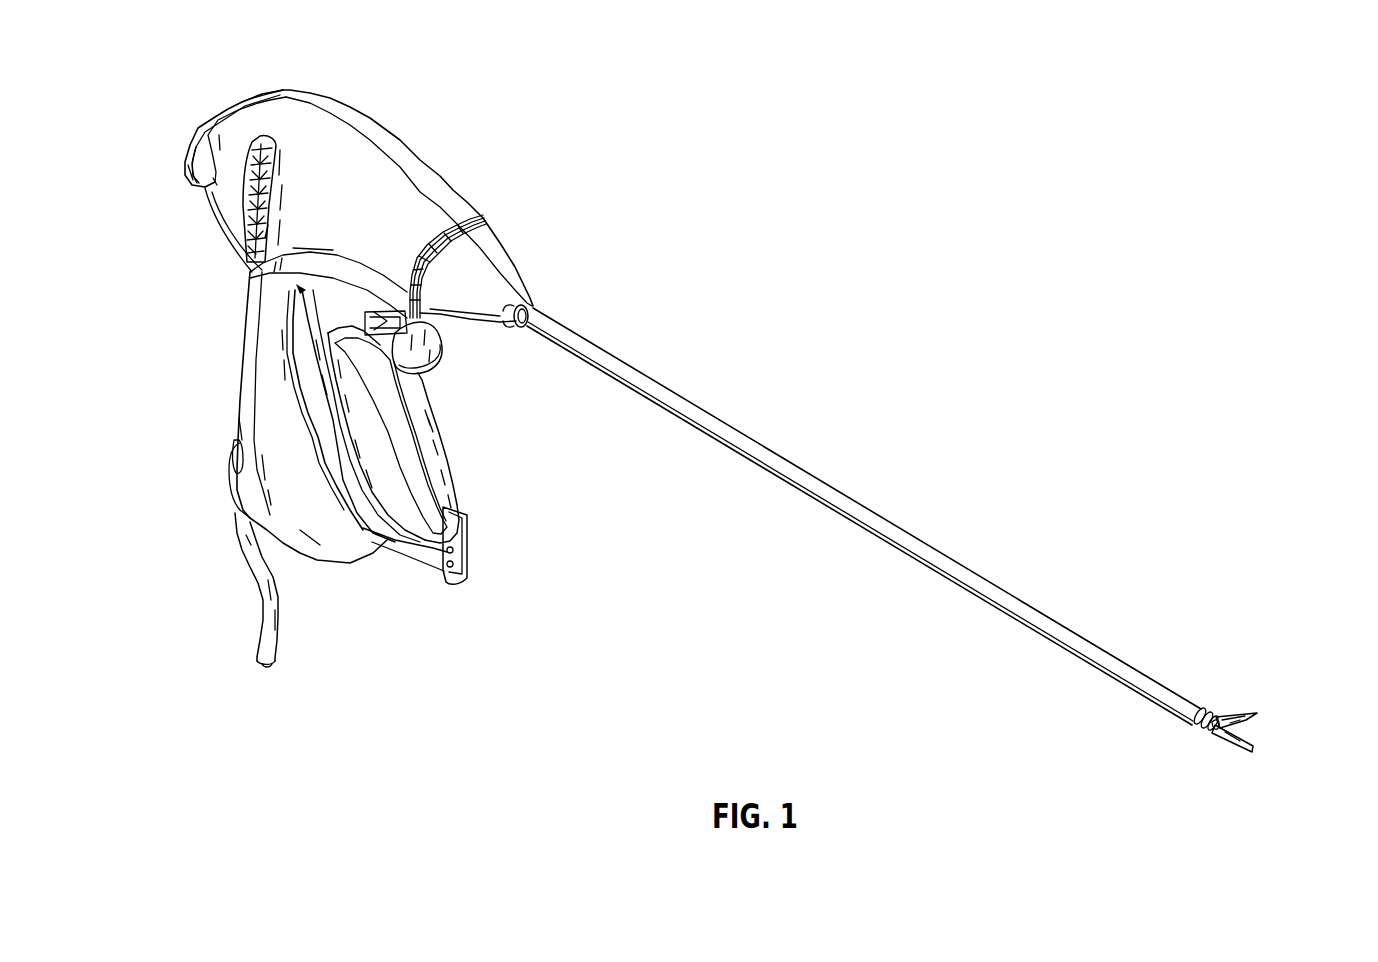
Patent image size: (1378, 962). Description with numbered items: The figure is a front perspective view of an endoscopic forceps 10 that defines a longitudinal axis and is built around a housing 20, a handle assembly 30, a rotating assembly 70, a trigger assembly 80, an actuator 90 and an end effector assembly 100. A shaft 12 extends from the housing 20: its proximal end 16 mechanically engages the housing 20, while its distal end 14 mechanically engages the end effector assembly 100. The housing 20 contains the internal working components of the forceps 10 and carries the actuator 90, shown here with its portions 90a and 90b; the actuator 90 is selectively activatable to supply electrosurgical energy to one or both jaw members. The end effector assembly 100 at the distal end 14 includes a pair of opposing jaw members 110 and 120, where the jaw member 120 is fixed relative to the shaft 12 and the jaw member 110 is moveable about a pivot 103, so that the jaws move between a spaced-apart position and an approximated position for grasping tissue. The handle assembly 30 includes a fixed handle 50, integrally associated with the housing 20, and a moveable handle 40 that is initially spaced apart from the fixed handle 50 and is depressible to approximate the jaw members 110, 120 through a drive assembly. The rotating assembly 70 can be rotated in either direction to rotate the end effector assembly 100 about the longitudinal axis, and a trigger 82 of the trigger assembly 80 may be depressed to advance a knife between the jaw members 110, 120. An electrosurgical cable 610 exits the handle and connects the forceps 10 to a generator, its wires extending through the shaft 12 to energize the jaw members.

The endoscopic forceps 10 is at (906, 299).
The shaft 12 is at (905, 531).
The distal end 14 is at (1191, 725).
The proximal end 16 is at (538, 318).
The housing 20 is at (405, 158).
The handle assembly 30 is at (380, 588).
The moveable handle 40 is at (448, 496).
The fixed handle 50 is at (268, 399).
The rotating assembly 70 is at (238, 197).
The trigger assembly 80 is at (452, 343).
The trigger 82 is at (422, 360).
The actuator 90 is at (190, 158).
The knob portion 90a is at (188, 144).
The knob portion 90b is at (234, 95).
The end effector assembly 100 is at (1267, 703).
The pivot 103 is at (1212, 734).
The jaw member 110 is at (1254, 712).
The jaw member 120 is at (1248, 751).
The electrosurgical cable 610 is at (270, 614).